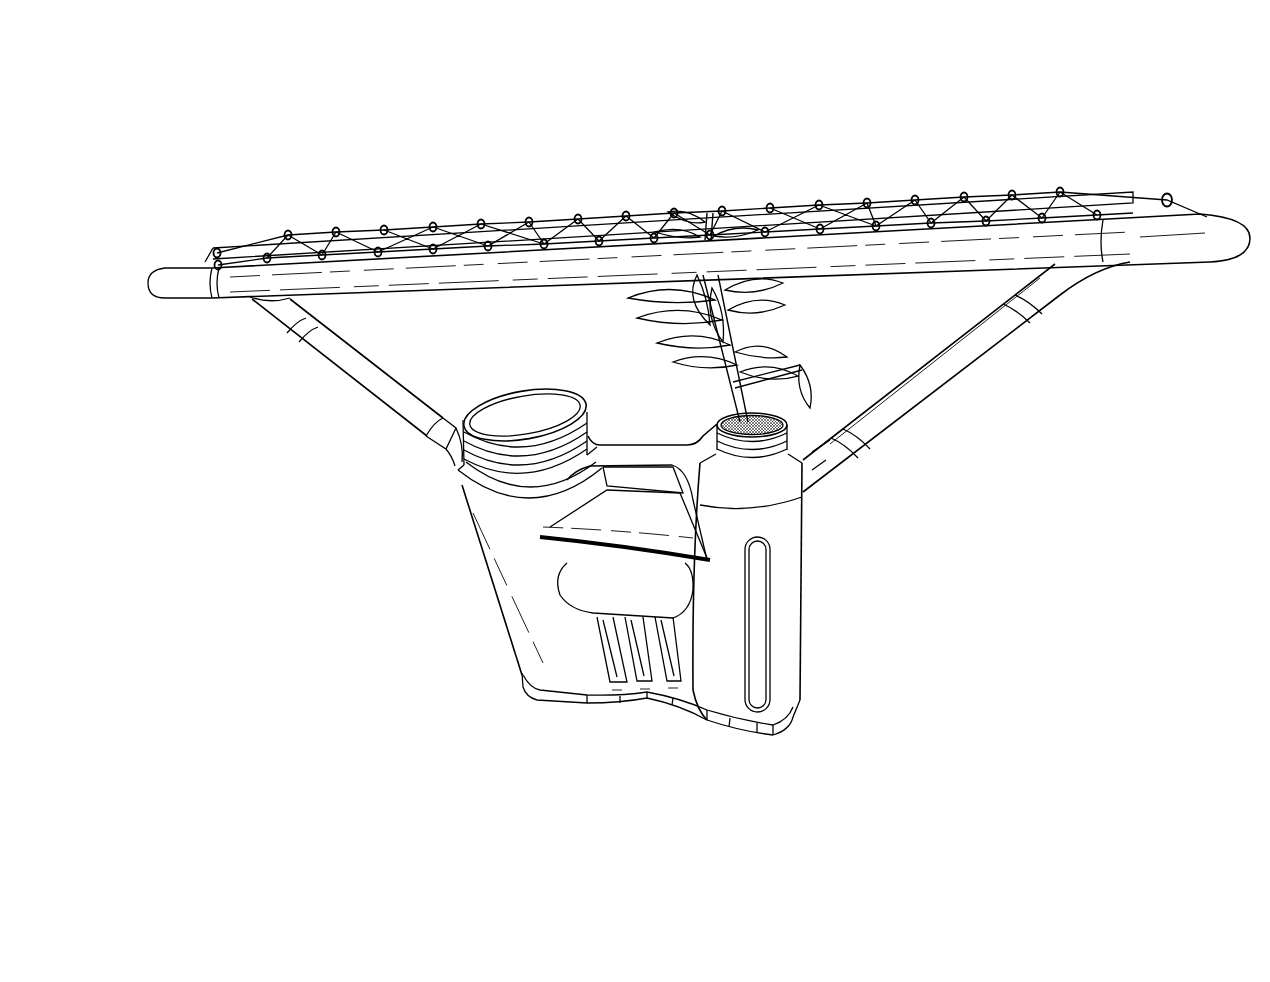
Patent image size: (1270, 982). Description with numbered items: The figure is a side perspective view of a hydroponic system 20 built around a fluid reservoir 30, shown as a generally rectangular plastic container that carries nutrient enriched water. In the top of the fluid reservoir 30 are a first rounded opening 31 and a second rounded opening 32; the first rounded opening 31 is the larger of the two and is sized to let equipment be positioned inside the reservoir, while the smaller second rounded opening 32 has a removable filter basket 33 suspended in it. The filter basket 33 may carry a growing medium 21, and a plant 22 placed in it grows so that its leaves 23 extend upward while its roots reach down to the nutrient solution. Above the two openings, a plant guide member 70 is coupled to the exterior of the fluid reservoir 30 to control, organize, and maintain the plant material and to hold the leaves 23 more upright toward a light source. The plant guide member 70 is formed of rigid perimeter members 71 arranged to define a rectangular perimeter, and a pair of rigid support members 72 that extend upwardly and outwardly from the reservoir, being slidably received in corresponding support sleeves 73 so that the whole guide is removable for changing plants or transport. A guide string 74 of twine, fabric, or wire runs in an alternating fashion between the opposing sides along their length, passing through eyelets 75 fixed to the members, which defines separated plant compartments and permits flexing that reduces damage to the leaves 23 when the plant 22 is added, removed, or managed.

The hydroponic system 20 is at (483, 133).
The growing medium 21 is at (750, 430).
The plant 22 is at (641, 290).
The leaves 23 is at (688, 213).
The fluid reservoir 30 is at (630, 704).
The first rounded opening 31 is at (507, 408).
The second rounded opening 32 is at (790, 425).
The filter basket 33 is at (743, 424).
The plant guide member 70 is at (818, 168).
The rigid perimeter members 71 is at (1037, 247).
The rigid support members 72 is at (328, 347).
The support sleeves 73 is at (462, 455).
The guide string 74 is at (338, 238).
The eyelets 75 is at (478, 243).